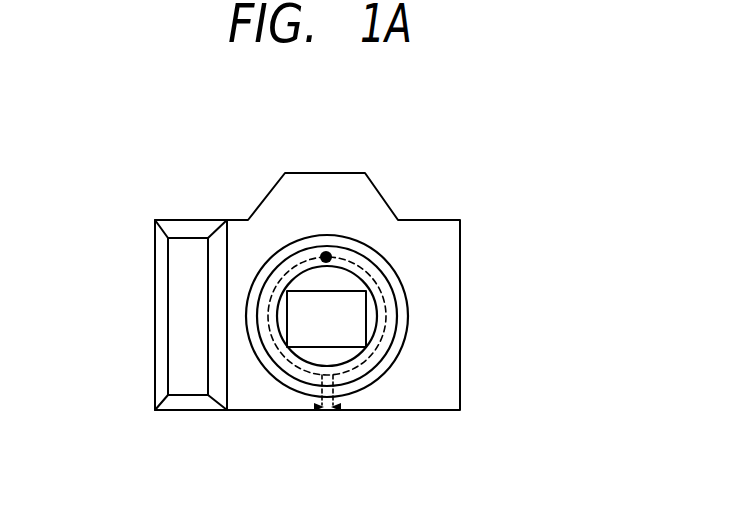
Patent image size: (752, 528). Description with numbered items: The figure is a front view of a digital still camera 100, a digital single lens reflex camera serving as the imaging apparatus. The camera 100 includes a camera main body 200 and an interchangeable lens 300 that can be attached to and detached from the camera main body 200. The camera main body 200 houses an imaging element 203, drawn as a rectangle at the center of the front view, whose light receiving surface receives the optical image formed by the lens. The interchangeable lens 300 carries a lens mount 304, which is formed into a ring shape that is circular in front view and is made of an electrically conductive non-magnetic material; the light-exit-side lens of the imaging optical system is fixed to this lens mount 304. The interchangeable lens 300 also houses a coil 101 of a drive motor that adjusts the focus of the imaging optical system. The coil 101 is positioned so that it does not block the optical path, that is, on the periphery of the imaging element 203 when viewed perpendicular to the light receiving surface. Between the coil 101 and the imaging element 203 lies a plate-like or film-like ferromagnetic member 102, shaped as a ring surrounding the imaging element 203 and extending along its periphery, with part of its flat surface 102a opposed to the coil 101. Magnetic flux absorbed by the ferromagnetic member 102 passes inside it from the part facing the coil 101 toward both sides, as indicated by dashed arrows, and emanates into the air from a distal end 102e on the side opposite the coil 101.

The digital still camera 100 is at (363, 146).
The camera main body 200 is at (435, 220).
The interchangeable lens 300 is at (400, 363).
The ferromagnetic member 102 is at (372, 257).
The flat surface 102a is at (381, 284).
The lens mount 304 is at (400, 327).
The distal end 102e is at (323, 385).
The imaging element 203 is at (305, 320).
The coil 101 is at (326, 257).